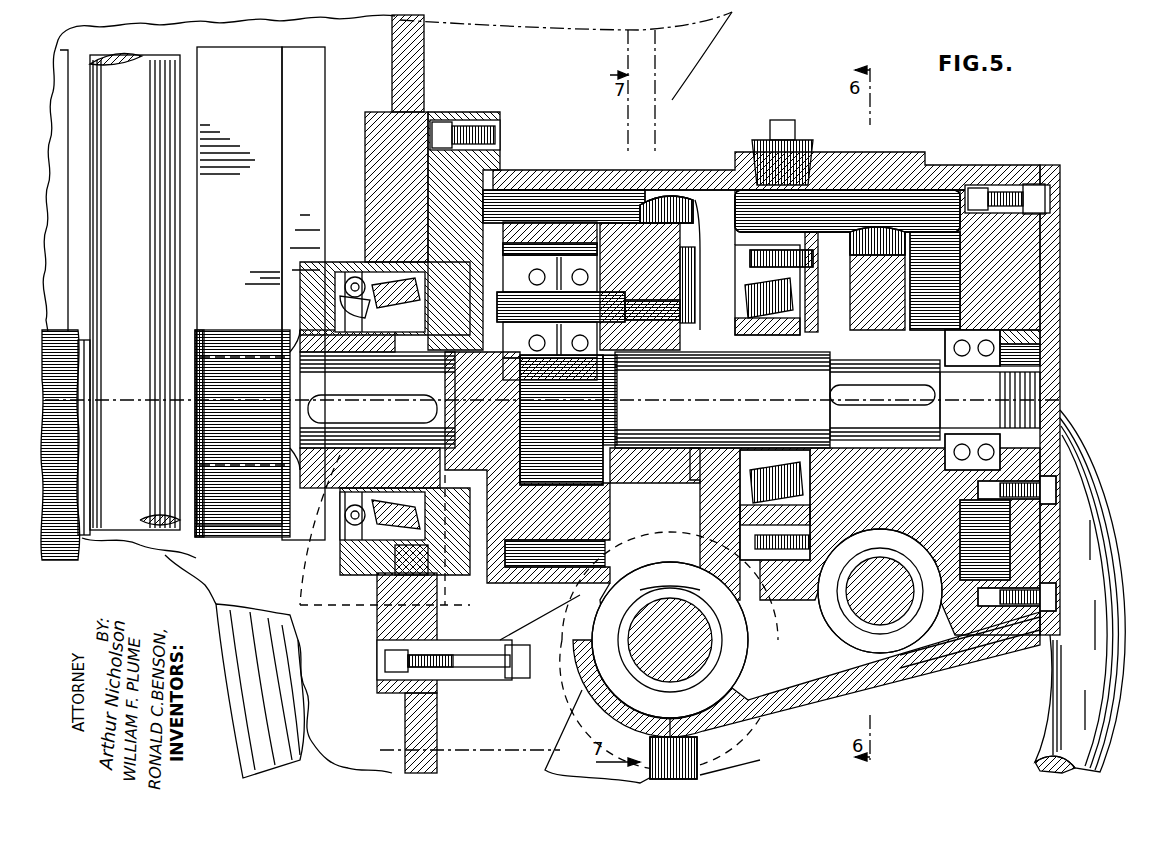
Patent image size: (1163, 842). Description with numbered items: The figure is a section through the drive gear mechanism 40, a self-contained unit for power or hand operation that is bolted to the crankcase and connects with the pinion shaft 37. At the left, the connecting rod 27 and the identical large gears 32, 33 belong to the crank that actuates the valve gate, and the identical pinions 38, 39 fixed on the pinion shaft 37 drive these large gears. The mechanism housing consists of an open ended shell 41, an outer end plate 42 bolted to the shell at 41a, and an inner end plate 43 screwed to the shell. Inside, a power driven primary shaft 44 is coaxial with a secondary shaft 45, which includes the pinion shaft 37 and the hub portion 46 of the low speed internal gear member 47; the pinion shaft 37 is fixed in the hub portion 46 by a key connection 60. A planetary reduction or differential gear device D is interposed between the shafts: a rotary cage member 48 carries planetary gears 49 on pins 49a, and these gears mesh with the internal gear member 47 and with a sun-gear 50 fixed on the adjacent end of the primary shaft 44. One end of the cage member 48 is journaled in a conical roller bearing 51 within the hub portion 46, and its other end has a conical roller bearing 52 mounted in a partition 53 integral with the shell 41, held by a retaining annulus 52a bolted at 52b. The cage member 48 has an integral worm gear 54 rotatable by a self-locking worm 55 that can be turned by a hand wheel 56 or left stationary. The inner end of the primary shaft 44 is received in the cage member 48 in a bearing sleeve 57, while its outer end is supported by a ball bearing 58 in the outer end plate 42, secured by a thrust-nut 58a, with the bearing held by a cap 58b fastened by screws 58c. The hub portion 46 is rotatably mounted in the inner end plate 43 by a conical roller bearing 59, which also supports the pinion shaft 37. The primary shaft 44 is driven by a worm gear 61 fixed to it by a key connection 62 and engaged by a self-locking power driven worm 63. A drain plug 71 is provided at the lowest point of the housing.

The connecting rod 27 is at (135, 291).
The large gear 32 is at (261, 293).
The large gear 33 is at (219, 396).
The pinion shaft 37 is at (86, 540).
The pinion 38 is at (220, 580).
The pinion 39 is at (50, 560).
The gear mechanism 40 is at (790, 361).
The shell 41 is at (705, 172).
The bolt connection 41a is at (520, 680).
The outer end plate 42 is at (1057, 250).
The inner end plate 43 is at (500, 138).
The primary shaft 44 is at (827, 400).
The secondary shaft 45 is at (345, 545).
The hub portion 46 is at (325, 468).
The internal gear member 47 is at (585, 580).
The cage member 48 is at (740, 520).
The planetary gears 49 is at (608, 258).
The pins 49a is at (588, 306).
The sun-gear 50 is at (605, 385).
The conical roller bearing 51 is at (377, 400).
The conical roller bearing 52 is at (752, 298).
The retaining annulus 52a is at (828, 292).
The bolts 52b is at (830, 232).
The partition 53 is at (712, 222).
The worm gear 54 is at (660, 205).
The worm 55 is at (745, 625).
The hand wheel 56 is at (1095, 545).
The bearing sleeve 57 is at (620, 380).
The ball bearing 58 is at (950, 335).
The thrust-nut 58a is at (1045, 352).
The cap 58b is at (1045, 336).
The screws 58c is at (1058, 487).
The conical roller bearing 59 is at (385, 298).
The key connection 60 is at (343, 402).
The worm gear 61 is at (905, 262).
The key connection 62 is at (882, 386).
The power driven worm 63 is at (905, 600).
The drain plug 71 is at (688, 737).
The planetary reduction gear device D is at (605, 255).